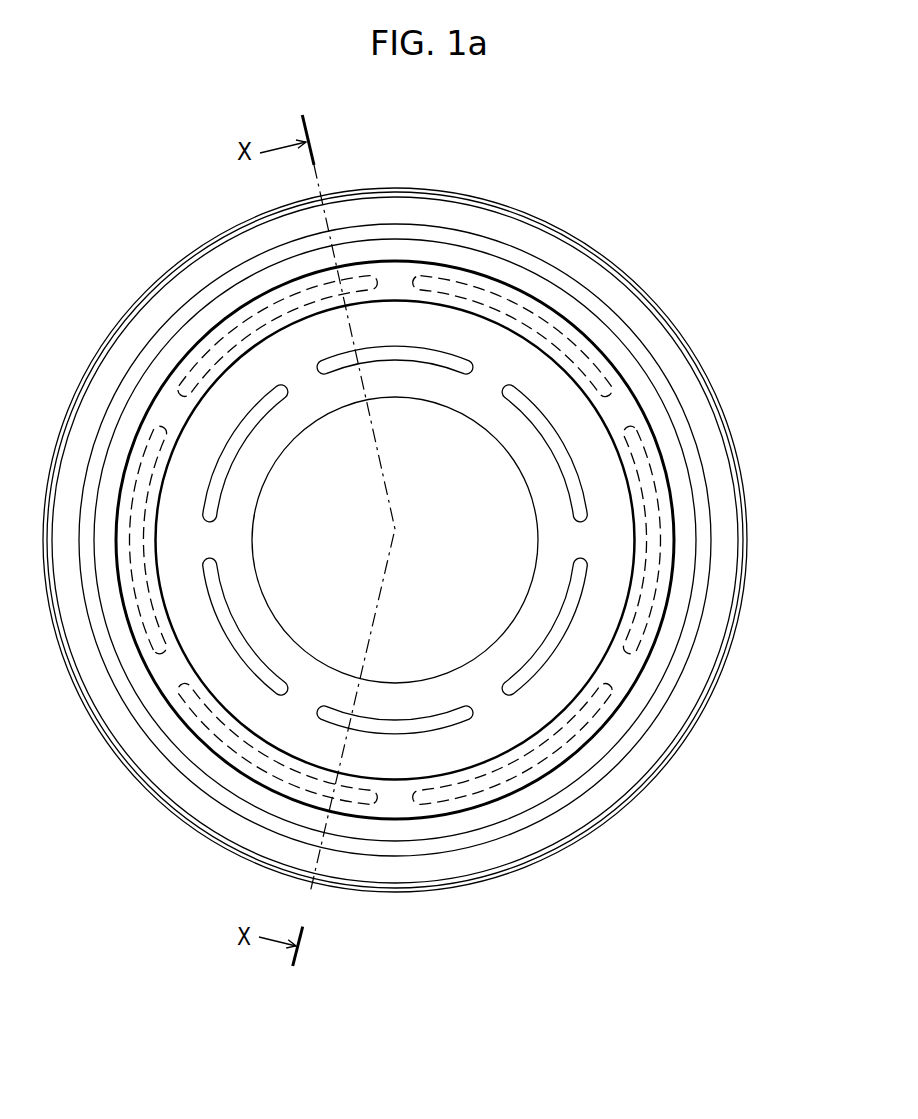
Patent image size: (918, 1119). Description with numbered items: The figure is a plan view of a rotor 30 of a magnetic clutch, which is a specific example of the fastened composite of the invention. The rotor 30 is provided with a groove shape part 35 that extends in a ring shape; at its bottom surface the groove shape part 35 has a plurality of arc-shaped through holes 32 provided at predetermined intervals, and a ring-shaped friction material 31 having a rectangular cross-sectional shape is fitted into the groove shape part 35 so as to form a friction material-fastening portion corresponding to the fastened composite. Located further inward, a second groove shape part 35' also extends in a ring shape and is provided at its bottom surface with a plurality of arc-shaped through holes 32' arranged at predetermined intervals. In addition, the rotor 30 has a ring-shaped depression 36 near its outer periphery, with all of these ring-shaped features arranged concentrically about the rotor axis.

The rotor 30 is at (627, 228).
The ring-shaped friction material 31 is at (395, 278).
The arc-shaped through holes 32 is at (394, 617).
The arc-shaped through holes 32' is at (395, 642).
The groove shape part 35 is at (429, 540).
The groove shape part 35' is at (701, 539).
The ring-shaped depression 36 is at (657, 364).